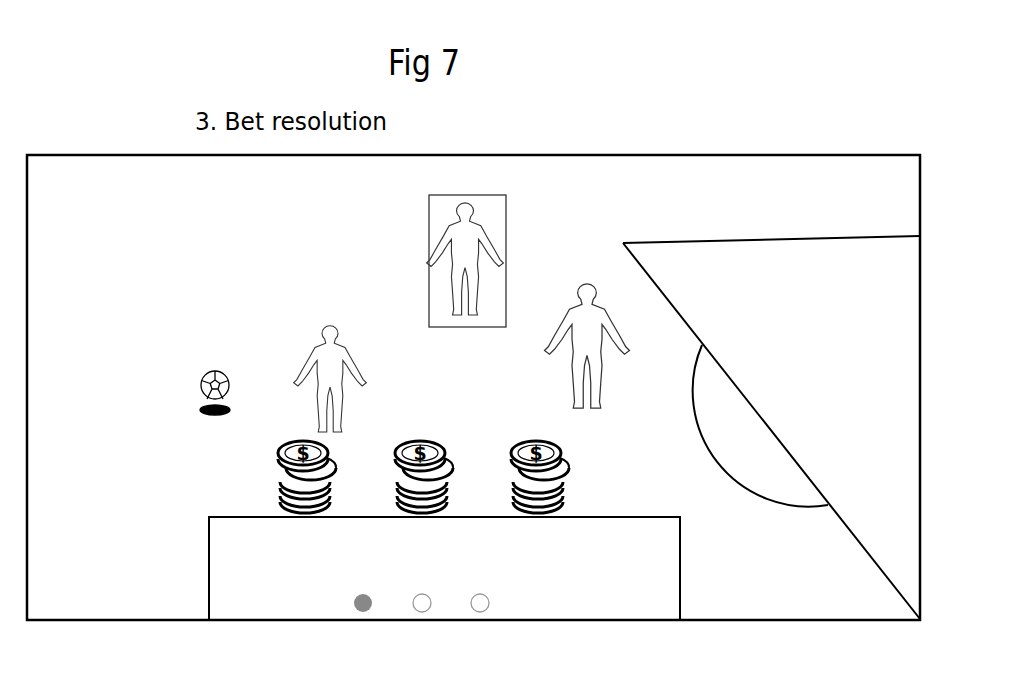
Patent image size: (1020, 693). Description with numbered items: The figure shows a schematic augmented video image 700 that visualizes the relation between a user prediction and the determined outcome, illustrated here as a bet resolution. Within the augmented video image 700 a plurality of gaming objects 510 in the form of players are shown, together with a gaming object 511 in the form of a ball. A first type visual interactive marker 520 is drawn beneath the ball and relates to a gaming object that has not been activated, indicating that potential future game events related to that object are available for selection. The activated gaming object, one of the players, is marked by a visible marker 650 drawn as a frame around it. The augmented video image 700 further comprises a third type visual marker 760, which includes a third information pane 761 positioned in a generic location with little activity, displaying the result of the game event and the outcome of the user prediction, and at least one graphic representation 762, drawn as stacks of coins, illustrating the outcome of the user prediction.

The augmented video image 700 is at (545, 155).
The visible marker 650 is at (429, 215).
The gaming objects 510 is at (478, 222).
The gaming object 511 is at (200, 381).
The first type visual interactive marker 520 is at (229, 413).
The graphic representation 762 is at (520, 445).
The third information pane 761 is at (209, 570).
The third type visual marker 760 is at (186, 505).